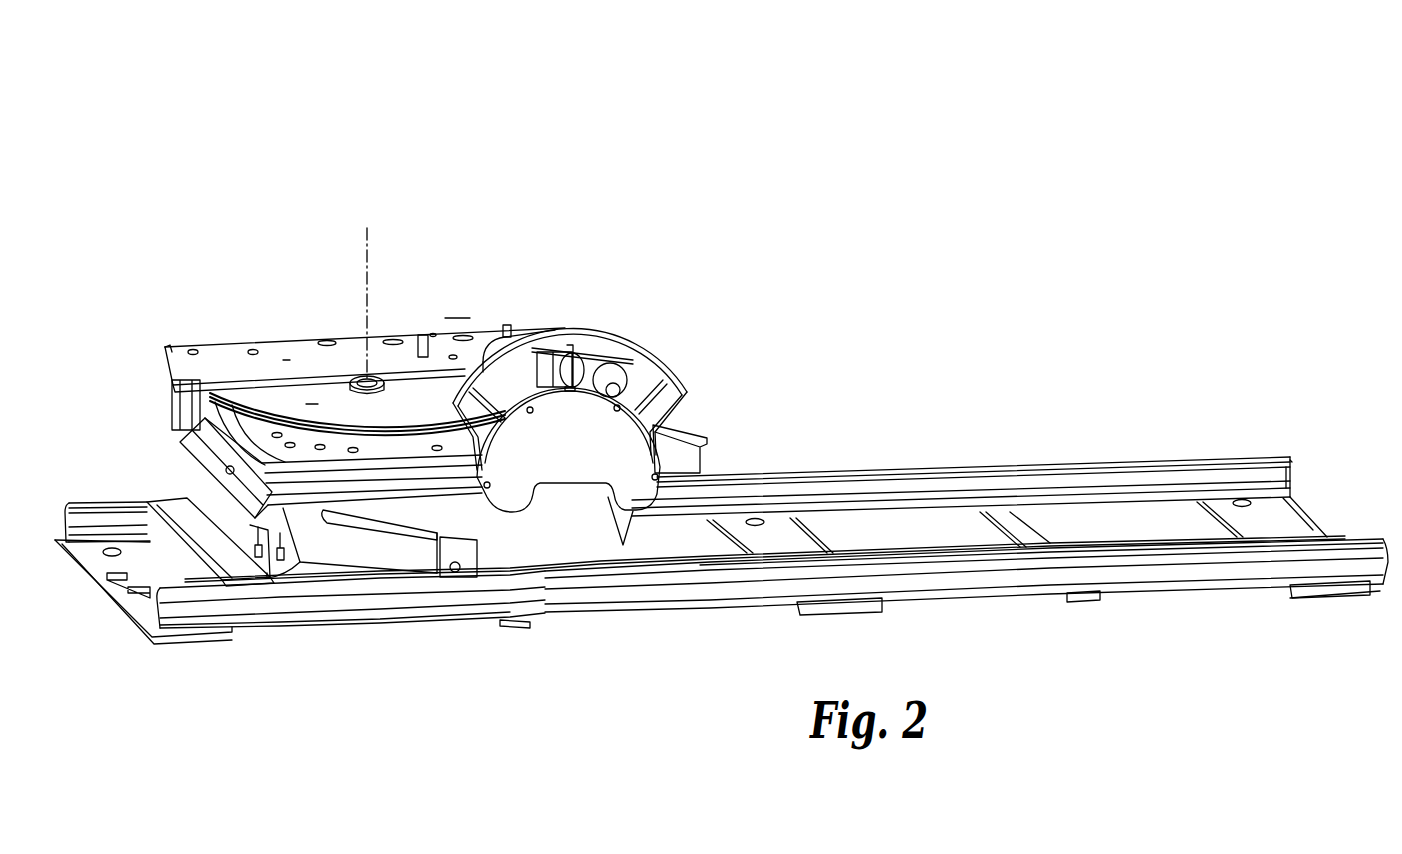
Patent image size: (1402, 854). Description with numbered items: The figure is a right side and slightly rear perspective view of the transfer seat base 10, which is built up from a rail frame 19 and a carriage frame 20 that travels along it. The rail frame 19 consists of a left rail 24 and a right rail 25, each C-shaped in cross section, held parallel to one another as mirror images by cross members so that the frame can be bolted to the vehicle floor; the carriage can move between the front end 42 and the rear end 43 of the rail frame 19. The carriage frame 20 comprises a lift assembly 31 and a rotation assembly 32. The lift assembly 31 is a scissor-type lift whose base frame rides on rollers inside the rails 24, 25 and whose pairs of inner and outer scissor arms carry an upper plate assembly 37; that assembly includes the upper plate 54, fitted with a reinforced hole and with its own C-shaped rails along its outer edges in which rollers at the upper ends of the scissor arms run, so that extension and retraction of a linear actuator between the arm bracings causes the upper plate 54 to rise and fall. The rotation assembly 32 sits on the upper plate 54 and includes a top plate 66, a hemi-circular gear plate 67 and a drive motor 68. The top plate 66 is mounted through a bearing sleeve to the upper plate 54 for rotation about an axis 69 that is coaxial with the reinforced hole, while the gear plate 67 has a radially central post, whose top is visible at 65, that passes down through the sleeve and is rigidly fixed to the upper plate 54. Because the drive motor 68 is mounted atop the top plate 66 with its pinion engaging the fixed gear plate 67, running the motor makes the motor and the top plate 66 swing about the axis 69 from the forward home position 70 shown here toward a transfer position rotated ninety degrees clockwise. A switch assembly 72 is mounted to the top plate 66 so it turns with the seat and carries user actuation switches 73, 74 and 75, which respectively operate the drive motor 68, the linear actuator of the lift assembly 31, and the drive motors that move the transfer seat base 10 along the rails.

The transfer seat base 10 is at (263, 191).
The rail frame 19 is at (1063, 456).
The carriage frame 20 is at (239, 336).
The left rail 24 is at (120, 501).
The right rail 25 is at (340, 610).
The lift assembly 31 is at (292, 576).
The rotation assembly 32 is at (457, 309).
The upper plate assembly 37 is at (158, 387).
The front end 42 is at (1242, 451).
The rear end 43 is at (85, 497).
The upper plate 54 is at (187, 385).
The top of radially central post 65 is at (368, 392).
The top plate 66 is at (288, 353).
The hemi-circular gear plate 67 is at (317, 400).
The drive motor 68 is at (487, 330).
The axis 69 is at (367, 243).
The home position 70 is at (757, 261).
The switch assembly 72 is at (625, 479).
The user actuation switch 73 is at (493, 413).
The user actuation switch 74 is at (592, 348).
The user actuation switch 75 is at (653, 367).